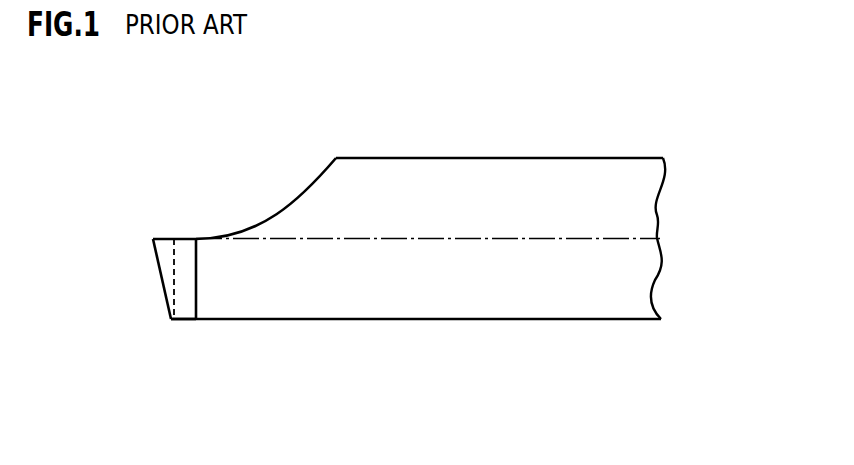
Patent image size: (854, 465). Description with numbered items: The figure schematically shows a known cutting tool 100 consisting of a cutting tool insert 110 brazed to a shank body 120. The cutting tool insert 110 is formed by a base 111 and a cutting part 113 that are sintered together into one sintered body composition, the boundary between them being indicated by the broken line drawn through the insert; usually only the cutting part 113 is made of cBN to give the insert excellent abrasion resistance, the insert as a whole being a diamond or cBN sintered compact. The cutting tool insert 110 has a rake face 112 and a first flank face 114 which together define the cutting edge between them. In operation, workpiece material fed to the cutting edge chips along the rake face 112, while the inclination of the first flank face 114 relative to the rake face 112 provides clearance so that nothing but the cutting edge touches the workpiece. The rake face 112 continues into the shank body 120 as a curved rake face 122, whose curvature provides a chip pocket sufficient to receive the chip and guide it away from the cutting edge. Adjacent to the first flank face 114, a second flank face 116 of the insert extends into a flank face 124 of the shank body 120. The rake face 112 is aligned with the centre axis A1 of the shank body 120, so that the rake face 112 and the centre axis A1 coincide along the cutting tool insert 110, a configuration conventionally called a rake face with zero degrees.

The cutting tool 100 is at (398, 218).
The cutting tool insert 110 is at (150, 254).
The base 111 is at (185, 245).
The rake face 112 is at (171, 231).
The cutting part 113 is at (160, 248).
The first flank face 114 is at (158, 275).
The second flank face 116 is at (182, 322).
The shank body 120 is at (478, 210).
The rake face of the shank body 122 is at (287, 208).
The flank face of the shank body 124 is at (327, 322).
The centre axis A1 is at (646, 239).